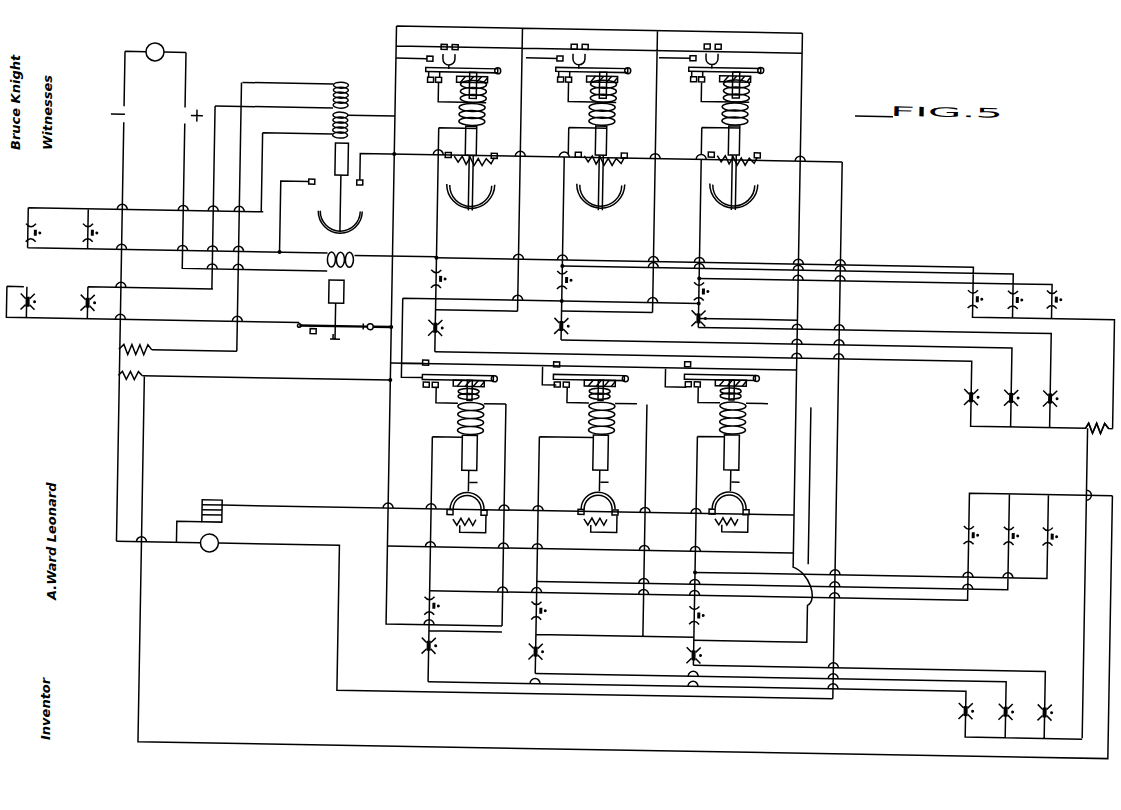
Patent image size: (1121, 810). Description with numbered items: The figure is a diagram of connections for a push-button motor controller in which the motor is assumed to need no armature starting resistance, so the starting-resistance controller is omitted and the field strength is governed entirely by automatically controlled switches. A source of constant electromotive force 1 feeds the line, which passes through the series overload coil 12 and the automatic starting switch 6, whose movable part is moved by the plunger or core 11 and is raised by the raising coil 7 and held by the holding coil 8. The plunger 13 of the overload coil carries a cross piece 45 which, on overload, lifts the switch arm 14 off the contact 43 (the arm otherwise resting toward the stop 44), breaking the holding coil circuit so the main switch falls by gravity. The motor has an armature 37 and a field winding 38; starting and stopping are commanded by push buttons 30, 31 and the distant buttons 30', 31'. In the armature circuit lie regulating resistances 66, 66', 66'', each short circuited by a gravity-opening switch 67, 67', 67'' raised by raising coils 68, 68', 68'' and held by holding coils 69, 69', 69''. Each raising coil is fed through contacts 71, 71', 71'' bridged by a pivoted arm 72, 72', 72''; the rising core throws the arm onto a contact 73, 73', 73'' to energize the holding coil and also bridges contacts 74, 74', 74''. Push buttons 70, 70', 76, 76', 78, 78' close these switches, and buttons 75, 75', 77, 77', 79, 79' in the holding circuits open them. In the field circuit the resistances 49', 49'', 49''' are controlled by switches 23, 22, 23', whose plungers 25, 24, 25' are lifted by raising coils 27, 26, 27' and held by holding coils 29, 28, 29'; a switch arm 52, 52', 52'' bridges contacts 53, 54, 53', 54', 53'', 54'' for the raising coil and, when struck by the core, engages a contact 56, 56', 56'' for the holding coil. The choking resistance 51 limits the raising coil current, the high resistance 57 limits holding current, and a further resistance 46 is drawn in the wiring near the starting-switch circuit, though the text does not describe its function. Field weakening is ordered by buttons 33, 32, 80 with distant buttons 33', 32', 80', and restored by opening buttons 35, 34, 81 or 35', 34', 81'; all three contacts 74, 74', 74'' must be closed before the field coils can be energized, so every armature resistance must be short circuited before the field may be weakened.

The source of constant electromotive force 1 is at (155, 43).
The automatic starting switch 6 is at (340, 204).
The raising coil 7 is at (334, 125).
The holding coil 8 is at (334, 95).
The plunger or core 11 is at (331, 162).
The series controlling coil 12 is at (350, 261).
The plunger 13 is at (342, 298).
The switch arm 14 is at (365, 334).
The speed controlling switch 22 is at (467, 503).
The speed controlling switch 23 is at (598, 503).
The additional field switch 23' is at (729, 503).
The plunger 24 is at (478, 453).
The plunger 25 is at (612, 463).
The plunger 25' is at (743, 463).
The raising coil 26 is at (479, 418).
The raising coil 27 is at (612, 418).
The raising coil 27' is at (744, 421).
The holding coil 28 is at (480, 396).
The holding coil 29 is at (614, 392).
The holding coil 29' is at (747, 394).
The push button switch 30 is at (80, 232).
The additional starting push button 30' is at (23, 232).
The push button switch 31 is at (96, 303).
The additional stopping push button 31' is at (34, 293).
The push button switch 32 is at (440, 606).
The additional speed controlling push button 32' is at (958, 535).
The push button switch 33 is at (547, 611).
The additional speed controlling push button 33' is at (1019, 527).
The push button 34 is at (439, 646).
The additional push button switch 34' is at (952, 720).
The push button 35 is at (545, 651).
The additional push button switch 35' is at (1012, 704).
The armature 37 is at (201, 548).
The field winding 38 is at (211, 502).
The contact 43 is at (298, 329).
The stop 44 is at (311, 339).
The cross piece 45 is at (334, 346).
The resistance 46 is at (124, 349).
The field resistance 49' is at (590, 529).
The field resistance 49'' is at (458, 529).
The field resistance 49''' is at (724, 530).
The resistance 51 is at (118, 380).
The switch arm 52 is at (591, 354).
The switch arm 52' is at (460, 359).
The switch arm 52'' is at (759, 375).
The contact 53 is at (587, 407).
The contact 53' is at (463, 404).
The contact 53'' is at (716, 410).
The contact 54 is at (547, 397).
The contact 54' is at (413, 395).
The contact 54'' is at (675, 400).
The contact 56 is at (566, 356).
The contact 56' is at (414, 354).
The contact 56'' is at (703, 362).
The resistance 57 is at (1096, 436).
The regulating resistance 66 is at (476, 181).
The regulating resistance 66' is at (607, 181).
The additional regulating resistance 66'' is at (742, 181).
The short circuiting switch 67 is at (471, 205).
The short circuiting switch 67' is at (602, 205).
The short circuiting switch 67'' is at (737, 206).
The raising coil 68 is at (461, 129).
The raising coil 68' is at (591, 129).
The raising coil 68'' is at (724, 128).
The holding coil 69 is at (486, 87).
The holding coil 69' is at (618, 87).
The holding coil 69'' is at (752, 87).
The push button switch 70 is at (446, 279).
The push button switch 70' is at (964, 300).
The contacts 71 is at (447, 90).
The contacts 71' is at (577, 90).
The contacts 71'' is at (709, 90).
The pivoted arm 72 is at (463, 65).
The pivoted arm 72' is at (593, 64).
The pivoted arm 72'' is at (726, 64).
The contact 73 is at (415, 32).
The contact 73' is at (545, 32).
The contact 73'' is at (678, 39).
The contacts 74 is at (454, 50).
The contacts 74' is at (586, 50).
The contacts 74'' is at (720, 49).
The push button switch 75 is at (445, 328).
The additional push button switch 75' is at (960, 397).
The push button switch 76 is at (572, 280).
The push button switch 76' is at (1020, 279).
The push button switch 77 is at (571, 326).
The push button switch 77' is at (997, 421).
The push button switch 78 is at (709, 291).
The additional push button switch 78' is at (1064, 287).
The push button switch 79 is at (688, 319).
The additional push button switch 79' is at (1069, 396).
The push button switch 80 is at (705, 615).
The additional push button switch 80' is at (1058, 551).
The push button switch 81 is at (703, 655).
The additional push button switch 81' is at (1052, 705).